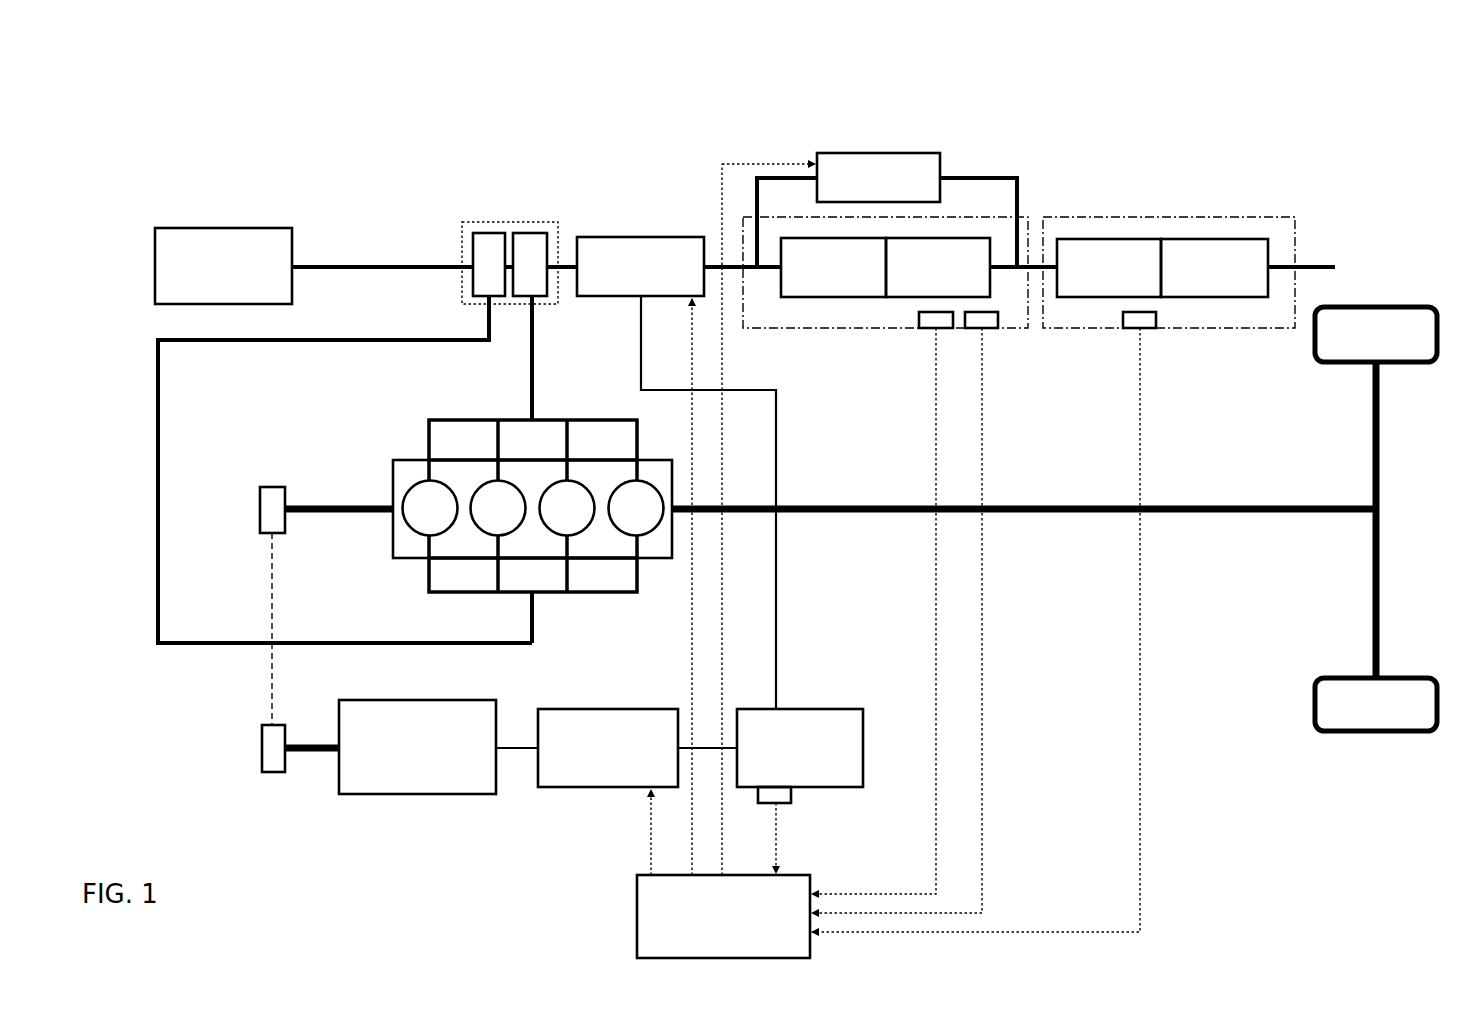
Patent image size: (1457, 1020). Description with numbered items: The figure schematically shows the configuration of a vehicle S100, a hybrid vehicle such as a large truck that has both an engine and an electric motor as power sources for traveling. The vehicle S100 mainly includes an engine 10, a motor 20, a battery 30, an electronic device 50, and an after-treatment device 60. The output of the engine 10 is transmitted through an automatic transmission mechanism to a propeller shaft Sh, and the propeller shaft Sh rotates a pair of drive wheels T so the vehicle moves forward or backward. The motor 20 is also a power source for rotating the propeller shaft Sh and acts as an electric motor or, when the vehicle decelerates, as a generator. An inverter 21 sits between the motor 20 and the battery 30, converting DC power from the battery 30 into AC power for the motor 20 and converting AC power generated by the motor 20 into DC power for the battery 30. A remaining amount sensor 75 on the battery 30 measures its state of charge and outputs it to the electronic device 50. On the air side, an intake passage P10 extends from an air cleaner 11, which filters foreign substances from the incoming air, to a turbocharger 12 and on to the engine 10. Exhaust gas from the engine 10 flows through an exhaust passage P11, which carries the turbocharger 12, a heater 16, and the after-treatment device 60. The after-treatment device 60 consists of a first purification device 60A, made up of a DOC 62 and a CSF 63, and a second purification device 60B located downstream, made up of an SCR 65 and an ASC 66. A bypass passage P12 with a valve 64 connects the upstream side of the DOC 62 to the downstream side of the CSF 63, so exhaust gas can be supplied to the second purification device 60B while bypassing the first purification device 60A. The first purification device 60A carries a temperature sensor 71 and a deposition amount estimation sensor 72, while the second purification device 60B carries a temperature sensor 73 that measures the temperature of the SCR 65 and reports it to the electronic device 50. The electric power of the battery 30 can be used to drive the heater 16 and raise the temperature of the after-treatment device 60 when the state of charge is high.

The vehicle S100 is at (1357, 73).
The engine 10 is at (400, 458).
The air cleaner 11 is at (185, 228).
The turbocharger 12 is at (503, 222).
The heater 16 is at (647, 235).
The motor 20 is at (392, 797).
The inverter 21 is at (583, 789).
The battery 30 is at (850, 790).
The electronic device 50 is at (637, 922).
The after-treatment device 60 is at (1077, 108).
The first purification device 60A is at (977, 216).
The second purification device 60B is at (1147, 216).
The DOC 62 is at (820, 298).
The CSF 63 is at (900, 298).
The valve 64 is at (876, 150).
The SCR 65 is at (1104, 298).
The ASC 66 is at (1200, 298).
The temperature sensor 71 is at (927, 331).
The deposition amount estimation sensor 72 is at (985, 331).
The temperature sensor 73 is at (1147, 331).
The remaining amount sensor 75 is at (782, 806).
The intake passage P10 is at (378, 262).
The exhaust passage P11 is at (533, 385).
The bypass passage P12 is at (962, 175).
The propeller shaft Sh is at (836, 518).
The drive wheels T is at (1324, 364).